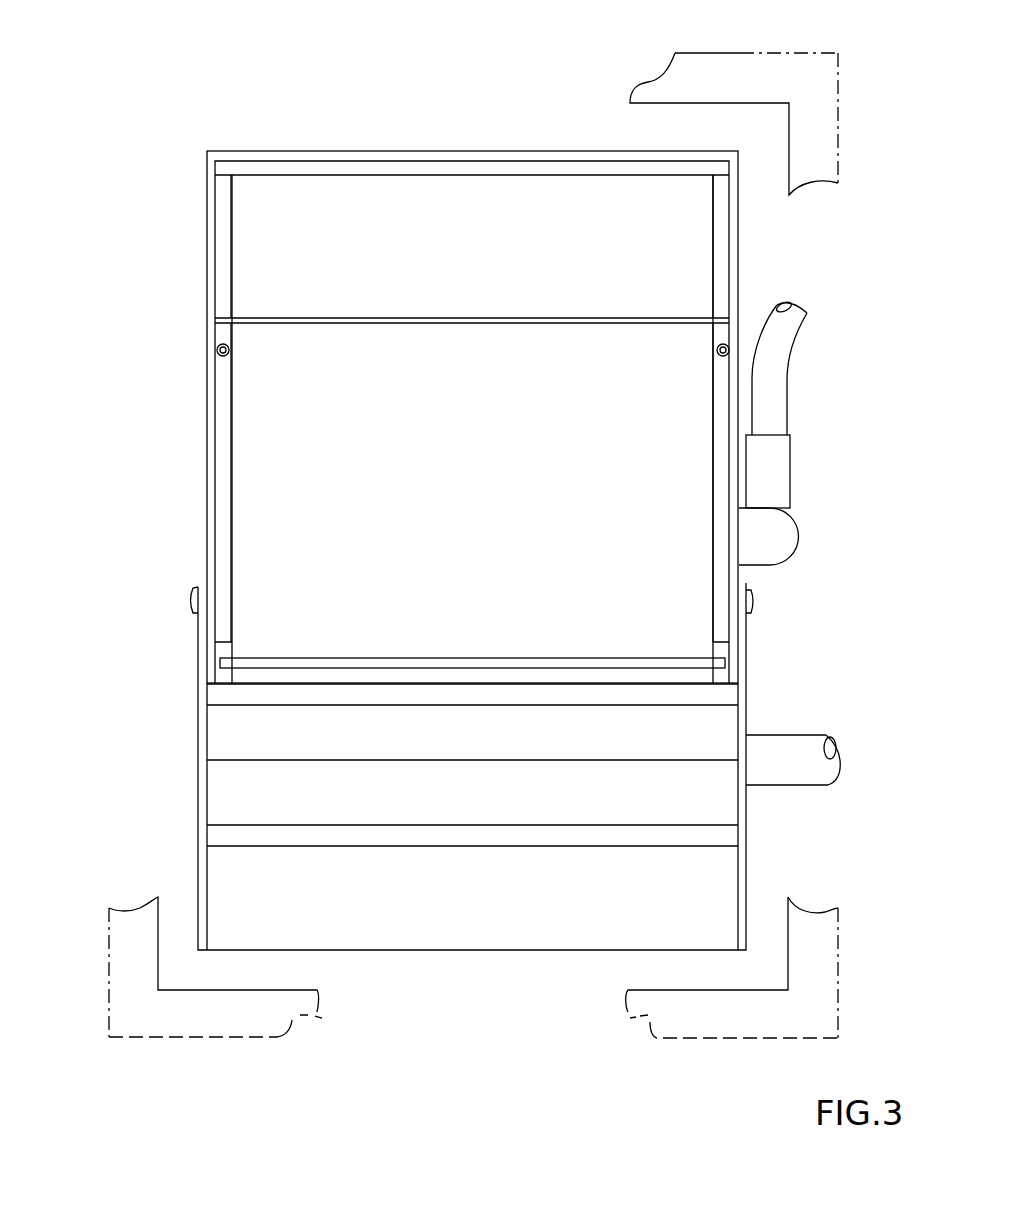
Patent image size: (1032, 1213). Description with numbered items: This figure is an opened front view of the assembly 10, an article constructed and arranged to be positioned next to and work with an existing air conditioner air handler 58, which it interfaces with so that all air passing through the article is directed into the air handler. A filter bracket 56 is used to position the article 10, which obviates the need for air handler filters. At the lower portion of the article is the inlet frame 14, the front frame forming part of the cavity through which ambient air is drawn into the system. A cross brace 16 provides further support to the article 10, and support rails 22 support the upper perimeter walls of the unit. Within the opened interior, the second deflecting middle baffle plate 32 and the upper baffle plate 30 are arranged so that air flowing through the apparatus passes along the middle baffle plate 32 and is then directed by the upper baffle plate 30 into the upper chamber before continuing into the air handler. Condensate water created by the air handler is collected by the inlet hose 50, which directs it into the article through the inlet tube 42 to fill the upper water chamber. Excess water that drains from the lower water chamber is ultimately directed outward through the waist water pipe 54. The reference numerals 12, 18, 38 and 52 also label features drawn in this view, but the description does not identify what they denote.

The assembly 10 is at (545, 24).
The frame 12 is at (350, 150).
The front frame 14 is at (197, 872).
The cross brace 16 is at (223, 695).
The base front panel 18 is at (246, 777).
The support rails 22 is at (282, 178).
The upper baffle plate 30 is at (309, 414).
The second deflecting middle baffle plate 32 is at (294, 238).
The pivot rings 38 is at (218, 345).
The inlet tube 42 is at (793, 553).
The inlet hose 50 is at (803, 338).
The pivot 52 is at (753, 610).
The waist water pipe 54 is at (797, 787).
The filter bracket 56 is at (222, 990).
The air handler 58 is at (107, 1027).